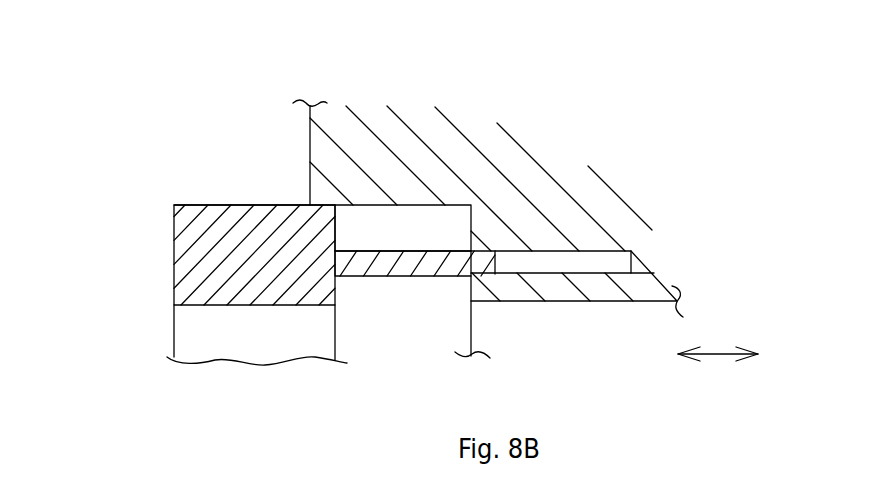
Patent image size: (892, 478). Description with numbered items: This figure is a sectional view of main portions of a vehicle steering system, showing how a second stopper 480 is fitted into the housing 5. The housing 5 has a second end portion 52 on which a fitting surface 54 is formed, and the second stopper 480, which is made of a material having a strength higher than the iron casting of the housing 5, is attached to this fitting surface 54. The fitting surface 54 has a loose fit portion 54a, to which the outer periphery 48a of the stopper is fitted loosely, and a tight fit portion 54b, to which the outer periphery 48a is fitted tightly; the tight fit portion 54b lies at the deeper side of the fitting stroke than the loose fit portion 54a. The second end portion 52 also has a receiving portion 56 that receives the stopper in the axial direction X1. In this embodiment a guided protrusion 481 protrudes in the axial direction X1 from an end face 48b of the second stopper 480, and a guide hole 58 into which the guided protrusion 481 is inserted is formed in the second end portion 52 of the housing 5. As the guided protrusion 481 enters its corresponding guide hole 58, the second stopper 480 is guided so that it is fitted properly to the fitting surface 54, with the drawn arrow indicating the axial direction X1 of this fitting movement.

The housing 5 is at (558, 162).
The second end portion 52 is at (485, 142).
The fitting surface 54 is at (428, 70).
The loose fit portion 54a is at (362, 203).
The tight fit portion 54b is at (435, 203).
The receiving portion 56 is at (476, 228).
The guide hole 58 is at (595, 267).
The second stopper 480 is at (202, 203).
The guided protrusion 481 is at (420, 278).
The outer periphery 48a is at (270, 204).
The end face 48b is at (337, 290).
The axial direction X1 is at (717, 358).